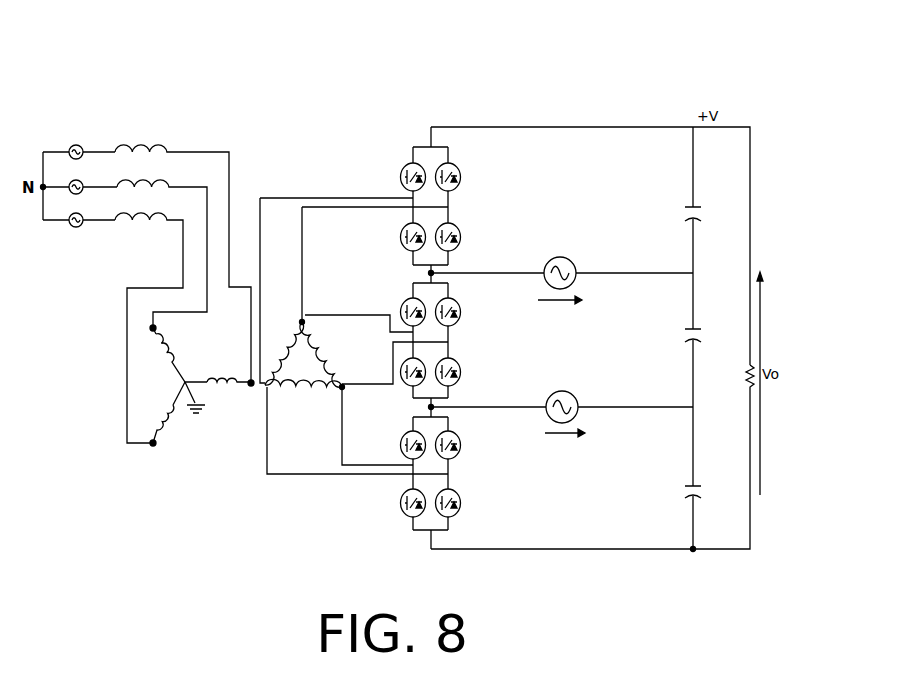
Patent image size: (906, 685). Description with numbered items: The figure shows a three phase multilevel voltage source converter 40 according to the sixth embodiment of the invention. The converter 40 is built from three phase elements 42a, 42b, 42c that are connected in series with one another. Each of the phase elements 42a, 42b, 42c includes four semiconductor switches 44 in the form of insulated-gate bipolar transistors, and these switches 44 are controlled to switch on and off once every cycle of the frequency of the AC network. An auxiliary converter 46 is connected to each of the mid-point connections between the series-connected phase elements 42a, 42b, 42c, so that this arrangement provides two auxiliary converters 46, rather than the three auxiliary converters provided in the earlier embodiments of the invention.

The three phase multilevel converter 40 is at (271, 148).
The first phase element 42a is at (458, 142).
The second phase element 42b is at (453, 279).
The third phase element 42c is at (453, 415).
The semiconductor switch 44 is at (400, 178).
The auxiliary converter 46 is at (570, 259).